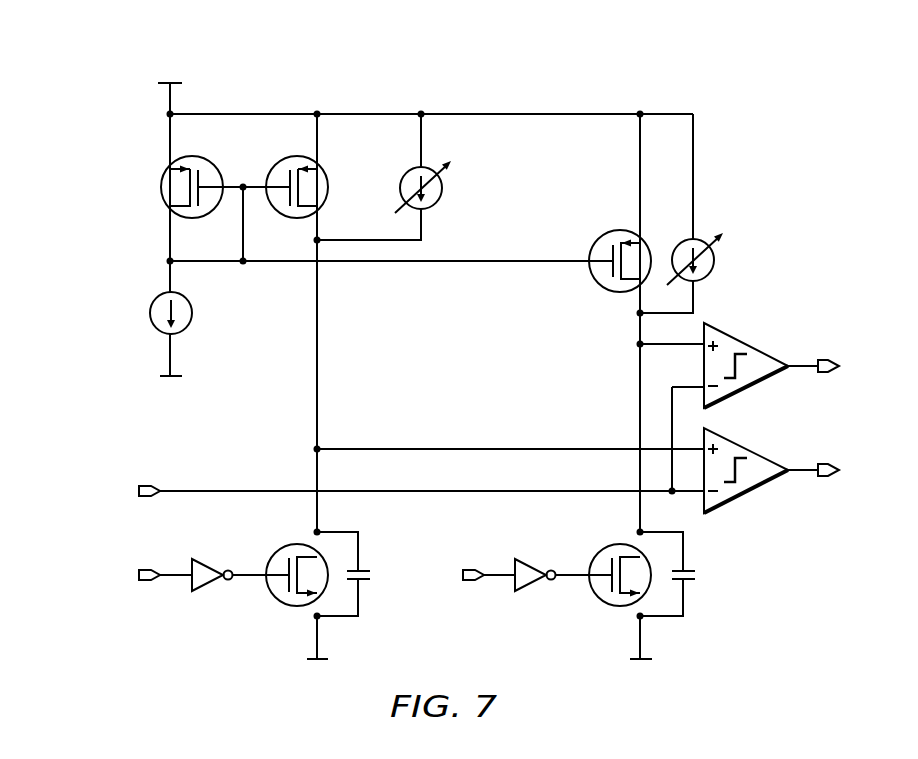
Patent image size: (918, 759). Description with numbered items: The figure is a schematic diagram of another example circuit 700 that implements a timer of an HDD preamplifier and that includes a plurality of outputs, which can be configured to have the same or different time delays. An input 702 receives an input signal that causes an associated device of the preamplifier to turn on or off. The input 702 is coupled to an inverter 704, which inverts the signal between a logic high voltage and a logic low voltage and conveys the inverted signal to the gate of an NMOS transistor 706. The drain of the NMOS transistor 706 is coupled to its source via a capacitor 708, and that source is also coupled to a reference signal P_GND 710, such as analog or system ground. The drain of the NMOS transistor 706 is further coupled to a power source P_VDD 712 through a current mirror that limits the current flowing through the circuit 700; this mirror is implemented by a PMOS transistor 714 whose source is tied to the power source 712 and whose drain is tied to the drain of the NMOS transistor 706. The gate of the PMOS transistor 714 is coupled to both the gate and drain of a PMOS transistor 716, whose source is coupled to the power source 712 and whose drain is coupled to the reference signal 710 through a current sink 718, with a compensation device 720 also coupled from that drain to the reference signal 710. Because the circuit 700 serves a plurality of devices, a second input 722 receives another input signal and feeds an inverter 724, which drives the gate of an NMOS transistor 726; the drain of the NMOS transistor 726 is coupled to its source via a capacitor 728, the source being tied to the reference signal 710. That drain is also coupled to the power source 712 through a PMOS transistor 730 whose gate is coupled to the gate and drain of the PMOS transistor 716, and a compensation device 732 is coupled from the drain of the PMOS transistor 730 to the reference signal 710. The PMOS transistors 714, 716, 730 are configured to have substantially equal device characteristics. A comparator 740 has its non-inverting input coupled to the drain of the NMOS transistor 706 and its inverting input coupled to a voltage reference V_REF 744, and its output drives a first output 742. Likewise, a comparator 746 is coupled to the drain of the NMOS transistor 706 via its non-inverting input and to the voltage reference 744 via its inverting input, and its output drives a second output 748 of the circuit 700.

The circuit 700 is at (772, 104).
The input 702 is at (141, 582).
The inverter 704 is at (228, 548).
The NMOS transistor 706 is at (278, 600).
The capacitor 708 is at (371, 578).
The reference signal P_GND 710 is at (171, 355).
The power source P_VDD 712 is at (168, 100).
The PMOS transistor 714 is at (328, 186).
The PMOS transistor 716 is at (162, 176).
The current sink 718 is at (150, 312).
The compensation device 720 is at (445, 184).
The second input 722 is at (465, 582).
The inverter 724 is at (553, 548).
The NMOS transistor 726 is at (602, 600).
The capacitor 728 is at (696, 578).
The PMOS transistor 730 is at (606, 237).
The compensation device 732 is at (715, 261).
The comparator 740 is at (742, 493).
The first output 742 is at (828, 478).
The voltage reference V_REF 744 is at (143, 498).
The comparator 746 is at (738, 341).
The second output 748 is at (823, 358).